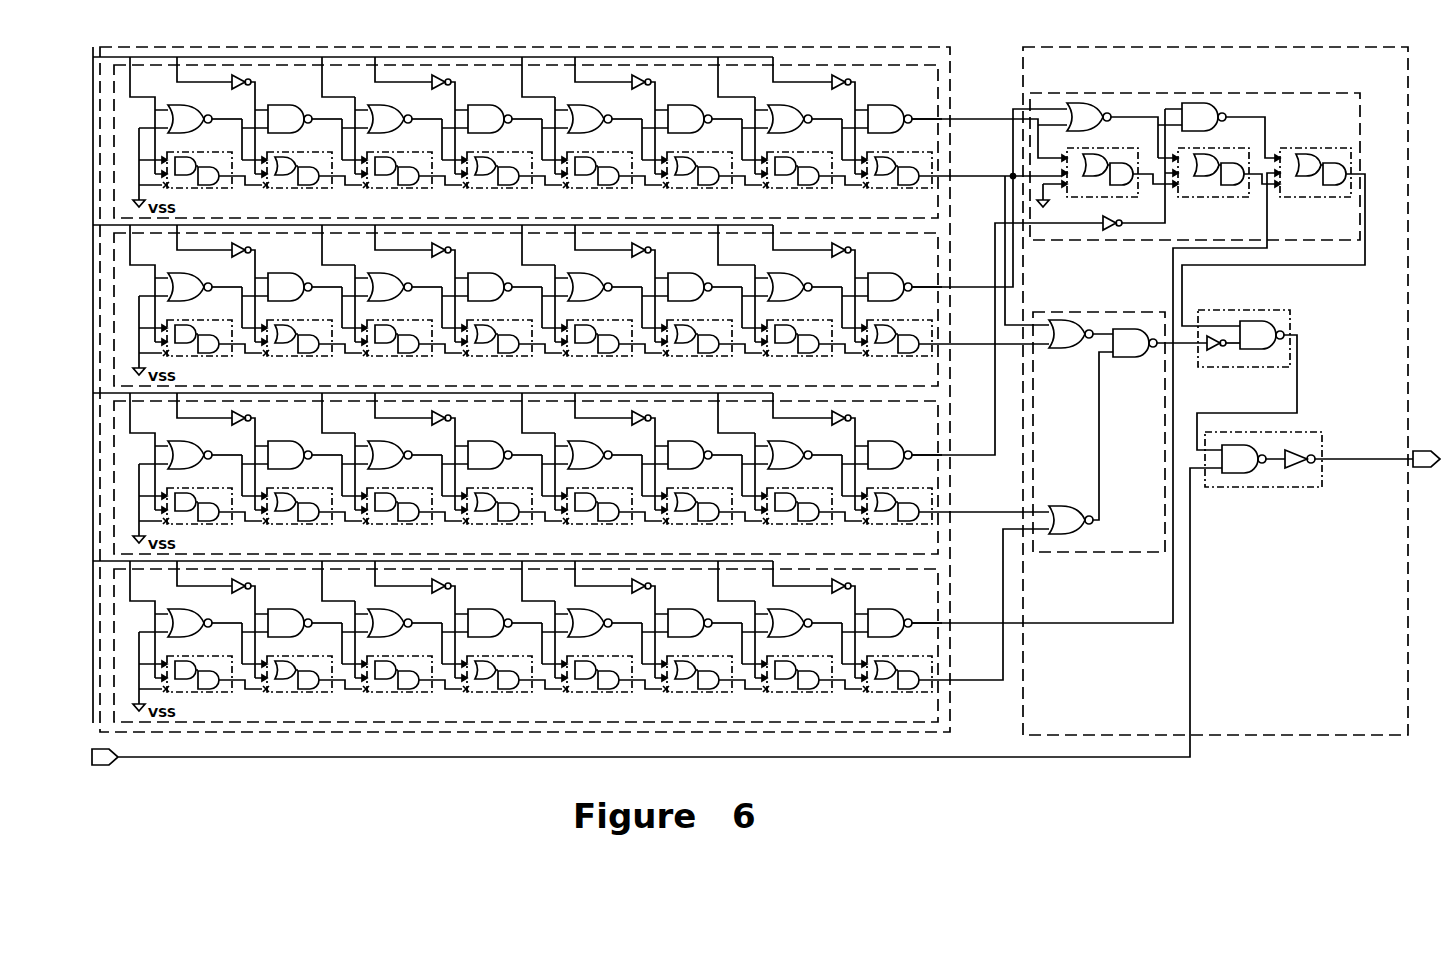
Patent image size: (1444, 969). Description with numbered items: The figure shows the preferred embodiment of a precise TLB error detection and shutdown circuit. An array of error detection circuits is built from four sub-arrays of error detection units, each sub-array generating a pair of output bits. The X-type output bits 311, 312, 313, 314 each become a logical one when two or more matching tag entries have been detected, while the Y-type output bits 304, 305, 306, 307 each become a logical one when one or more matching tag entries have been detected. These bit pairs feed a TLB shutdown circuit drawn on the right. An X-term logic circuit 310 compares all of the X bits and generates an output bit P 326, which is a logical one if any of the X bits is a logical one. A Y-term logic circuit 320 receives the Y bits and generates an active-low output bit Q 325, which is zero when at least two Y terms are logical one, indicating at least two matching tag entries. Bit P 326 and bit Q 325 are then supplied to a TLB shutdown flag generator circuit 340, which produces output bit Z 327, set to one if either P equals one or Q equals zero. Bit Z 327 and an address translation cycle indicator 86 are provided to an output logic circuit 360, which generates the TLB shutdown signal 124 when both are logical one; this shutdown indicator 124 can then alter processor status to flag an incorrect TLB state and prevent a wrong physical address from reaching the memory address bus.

The output bit Y0 304 is at (989, 120).
The output bit Y1 305 is at (989, 198).
The output bit Y2 306 is at (1007, 339).
The output bit Y3 307 is at (1093, 398).
The output bit X0 311 is at (997, 232).
The output bit X1 312 is at (990, 326).
The output bit X2 313 is at (990, 494).
The output bit X3 314 is at (990, 604).
The Y-term logic circuit 320 is at (1195, 155).
The X-term logic circuit 310 is at (1099, 422).
The TLB shutdown flag generator circuit 340 is at (1244, 328).
The output logic circuit 360 is at (1275, 449).
The output bit Q 325 is at (1289, 227).
The output bit P 326 is at (1189, 369).
The output bit Z 327 is at (1266, 384).
The TLB shutdown signal 124 is at (1379, 469).
The address translation cycle indicator 86 is at (657, 621).